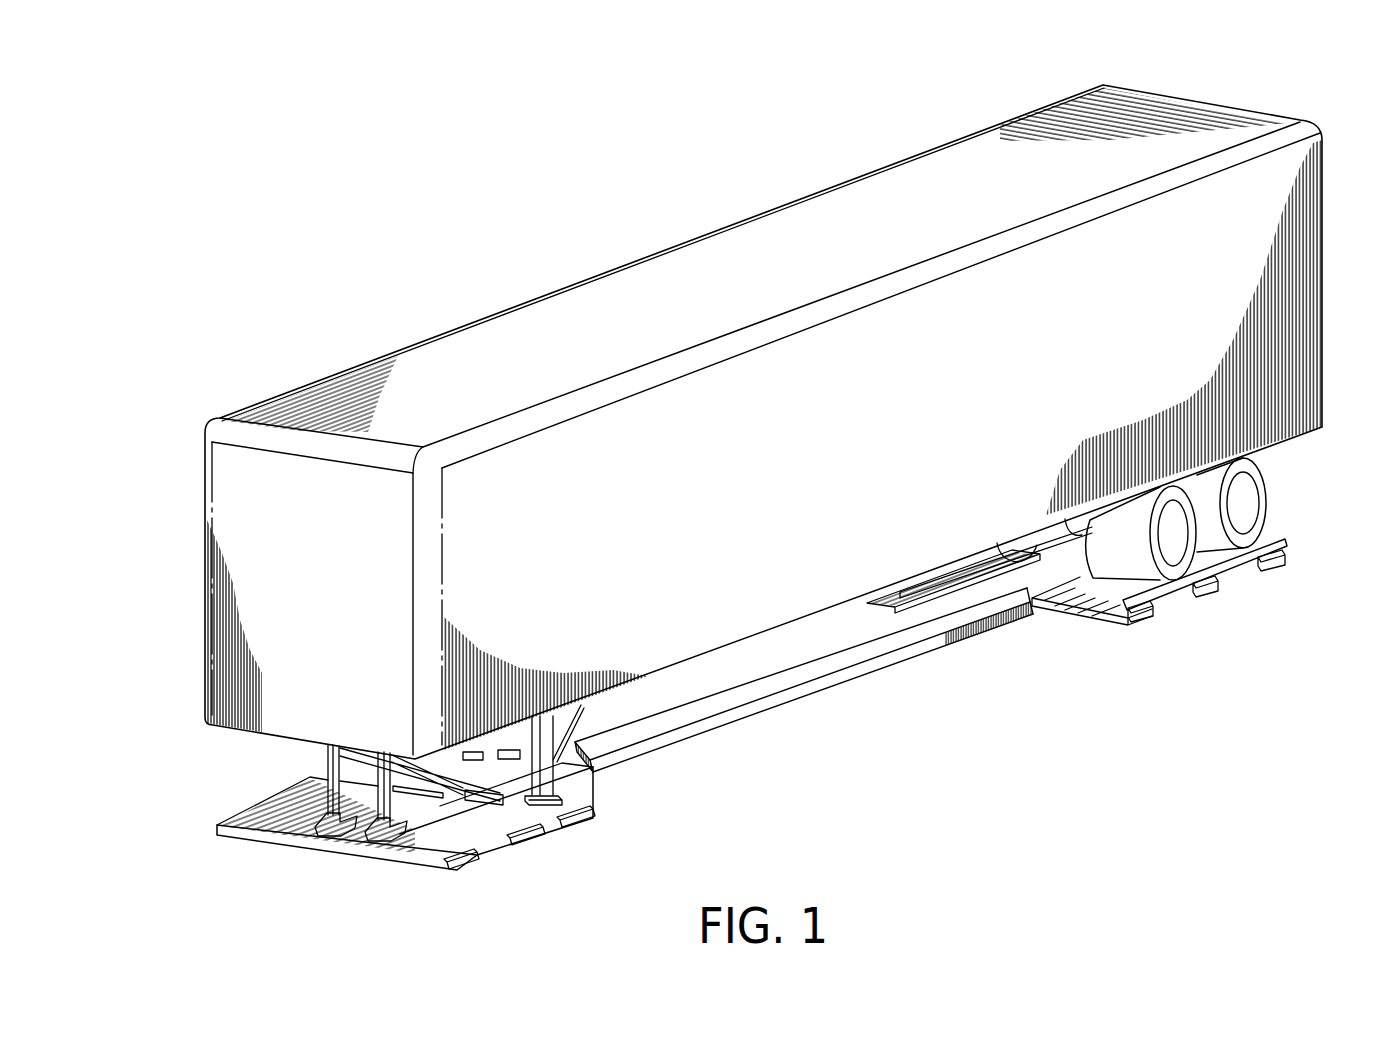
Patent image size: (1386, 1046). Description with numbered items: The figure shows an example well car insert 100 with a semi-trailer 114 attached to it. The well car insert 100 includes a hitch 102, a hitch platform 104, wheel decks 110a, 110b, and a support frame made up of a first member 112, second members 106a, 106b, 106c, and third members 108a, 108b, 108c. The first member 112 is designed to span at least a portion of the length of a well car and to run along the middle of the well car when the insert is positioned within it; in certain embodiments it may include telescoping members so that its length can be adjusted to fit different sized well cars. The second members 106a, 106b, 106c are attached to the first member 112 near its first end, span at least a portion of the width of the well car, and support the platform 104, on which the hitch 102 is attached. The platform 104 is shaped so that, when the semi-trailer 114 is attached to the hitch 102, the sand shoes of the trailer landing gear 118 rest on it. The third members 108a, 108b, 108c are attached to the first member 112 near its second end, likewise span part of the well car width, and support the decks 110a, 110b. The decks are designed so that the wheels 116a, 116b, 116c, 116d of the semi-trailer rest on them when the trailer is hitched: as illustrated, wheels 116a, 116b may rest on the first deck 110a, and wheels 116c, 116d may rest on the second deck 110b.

The well car insert 100 is at (995, 695).
The hitch 102 is at (290, 769).
The hitch platform 104 is at (457, 834).
The second member 106a is at (470, 868).
The second member 106b is at (537, 840).
The second member 106c is at (587, 823).
The third member 108a is at (1140, 621).
The third member 108b is at (1212, 596).
The third member 108c is at (1277, 570).
The first deck 110a is at (1093, 597).
The second deck 110b is at (949, 579).
The first member 112 is at (806, 675).
The semi-trailer 114 is at (1238, 200).
The wheel 116a is at (1140, 505).
The wheel 116b is at (1213, 480).
The wheel 116c is at (1010, 553).
The wheel 116d is at (1075, 528).
The trailer landing gear 118 is at (544, 733).